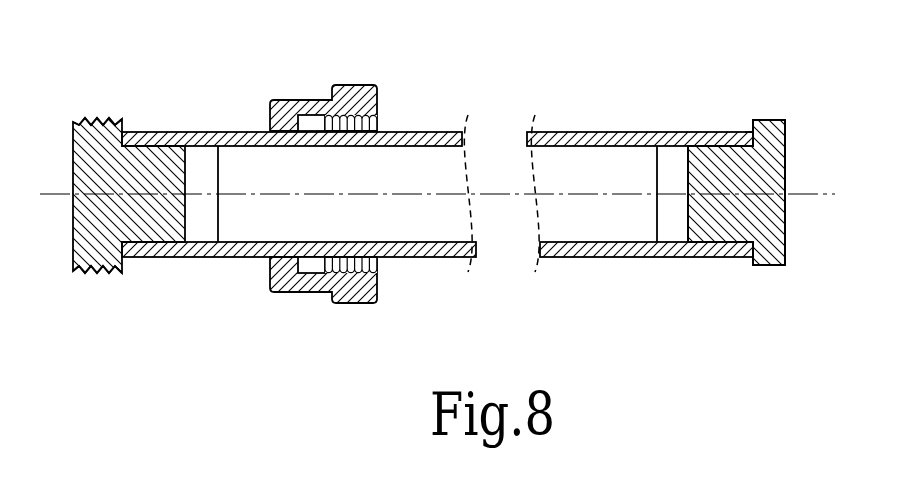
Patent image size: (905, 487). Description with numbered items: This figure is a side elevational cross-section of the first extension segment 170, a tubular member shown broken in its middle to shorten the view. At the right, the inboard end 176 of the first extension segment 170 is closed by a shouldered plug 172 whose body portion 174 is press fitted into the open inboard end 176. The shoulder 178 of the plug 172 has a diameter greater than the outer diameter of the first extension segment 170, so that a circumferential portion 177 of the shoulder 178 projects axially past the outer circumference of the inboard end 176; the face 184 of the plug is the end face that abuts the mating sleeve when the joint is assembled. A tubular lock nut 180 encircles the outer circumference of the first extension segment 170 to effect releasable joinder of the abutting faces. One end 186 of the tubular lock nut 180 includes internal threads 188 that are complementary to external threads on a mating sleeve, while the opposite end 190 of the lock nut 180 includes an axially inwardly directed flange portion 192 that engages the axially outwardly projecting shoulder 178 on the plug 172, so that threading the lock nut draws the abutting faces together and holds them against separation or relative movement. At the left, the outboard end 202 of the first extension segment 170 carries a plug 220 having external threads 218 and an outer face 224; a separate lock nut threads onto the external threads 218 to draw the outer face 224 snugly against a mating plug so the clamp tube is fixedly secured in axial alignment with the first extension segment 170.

The first extension segment 170 is at (577, 130).
The shouldered plug 172 is at (762, 167).
The body portion 174 is at (710, 222).
The inboard end 176 is at (720, 132).
The circumferential portion 177 is at (760, 118).
The shoulder 178 is at (786, 130).
The tubular lock nut 180 is at (332, 167).
The face 184 is at (787, 225).
The one end 186 is at (378, 92).
The internal threads 188 is at (380, 228).
The opposite end 190 is at (276, 100).
The flange portion 192 is at (287, 273).
The outboard end 202 is at (143, 132).
The external threads 218 is at (92, 117).
The plug 220 is at (97, 149).
The outer face 224 is at (72, 233).